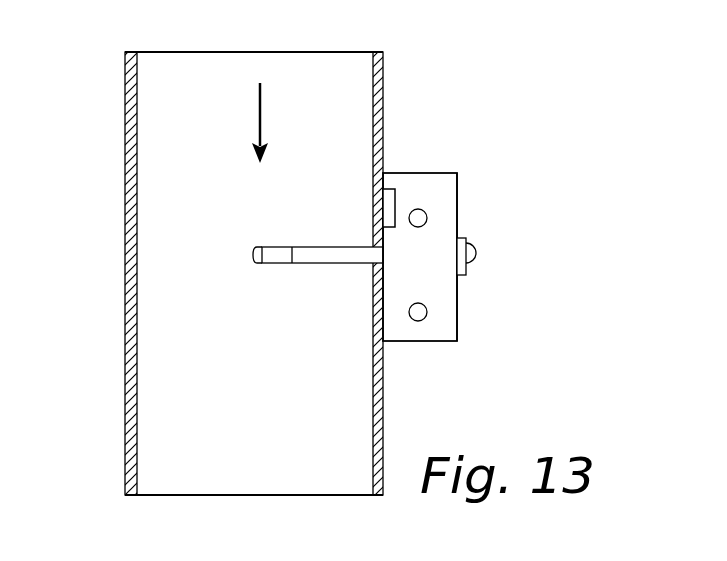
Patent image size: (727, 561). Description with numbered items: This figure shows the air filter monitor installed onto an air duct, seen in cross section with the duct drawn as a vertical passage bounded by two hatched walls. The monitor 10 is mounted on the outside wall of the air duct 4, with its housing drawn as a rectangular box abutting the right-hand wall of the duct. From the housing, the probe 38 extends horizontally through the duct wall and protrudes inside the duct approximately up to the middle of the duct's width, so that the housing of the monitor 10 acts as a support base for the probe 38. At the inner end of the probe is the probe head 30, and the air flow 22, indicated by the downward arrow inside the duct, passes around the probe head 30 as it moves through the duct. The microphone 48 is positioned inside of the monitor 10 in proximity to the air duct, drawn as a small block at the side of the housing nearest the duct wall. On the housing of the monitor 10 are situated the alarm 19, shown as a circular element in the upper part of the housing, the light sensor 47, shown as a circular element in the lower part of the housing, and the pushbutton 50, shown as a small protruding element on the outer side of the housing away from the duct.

The air duct 4 is at (128, 128).
The air flow 22 is at (247, 123).
The probe head 30 is at (253, 258).
The probe 38 is at (297, 268).
The monitor 10 is at (448, 200).
The microphone 48 is at (388, 189).
The alarm 19 is at (425, 213).
The light sensor 47 is at (424, 316).
The pushbutton 50 is at (471, 258).